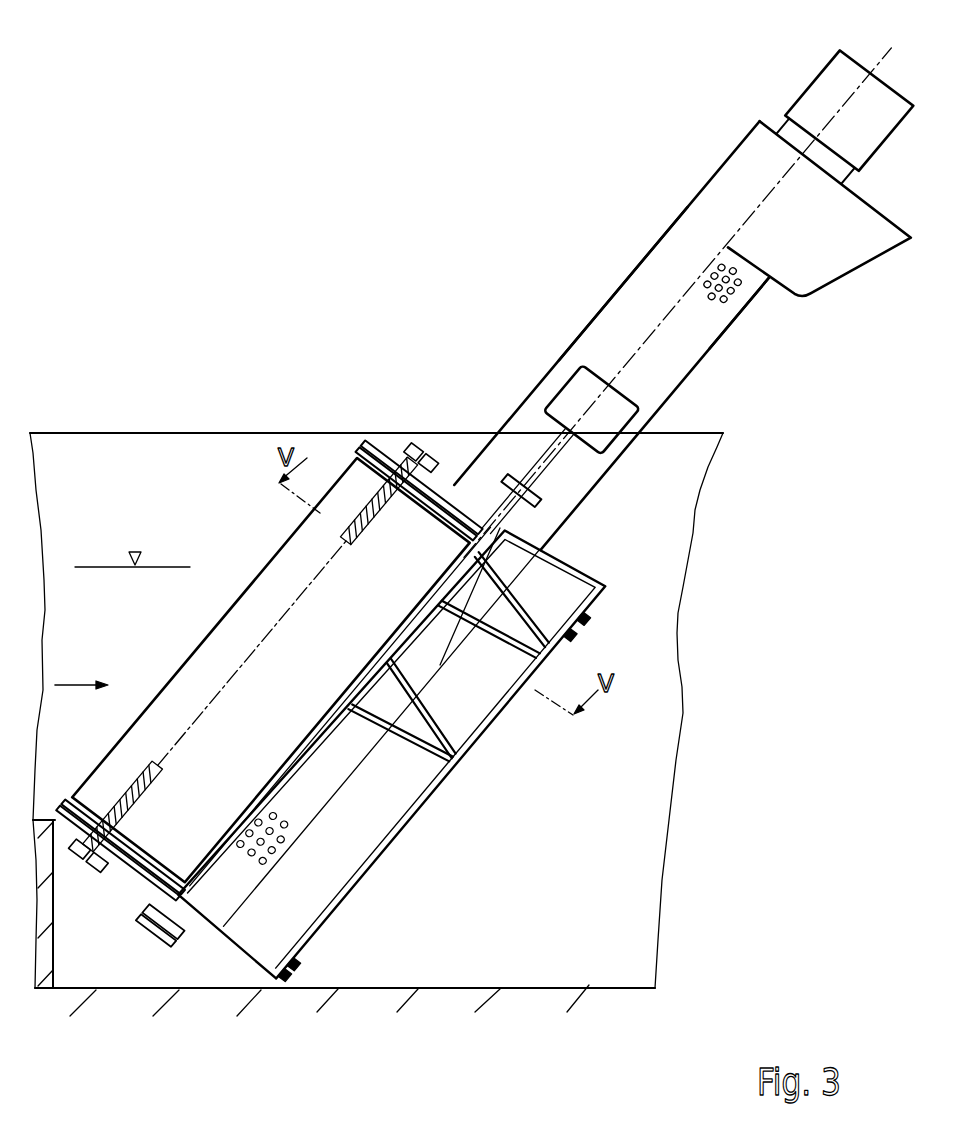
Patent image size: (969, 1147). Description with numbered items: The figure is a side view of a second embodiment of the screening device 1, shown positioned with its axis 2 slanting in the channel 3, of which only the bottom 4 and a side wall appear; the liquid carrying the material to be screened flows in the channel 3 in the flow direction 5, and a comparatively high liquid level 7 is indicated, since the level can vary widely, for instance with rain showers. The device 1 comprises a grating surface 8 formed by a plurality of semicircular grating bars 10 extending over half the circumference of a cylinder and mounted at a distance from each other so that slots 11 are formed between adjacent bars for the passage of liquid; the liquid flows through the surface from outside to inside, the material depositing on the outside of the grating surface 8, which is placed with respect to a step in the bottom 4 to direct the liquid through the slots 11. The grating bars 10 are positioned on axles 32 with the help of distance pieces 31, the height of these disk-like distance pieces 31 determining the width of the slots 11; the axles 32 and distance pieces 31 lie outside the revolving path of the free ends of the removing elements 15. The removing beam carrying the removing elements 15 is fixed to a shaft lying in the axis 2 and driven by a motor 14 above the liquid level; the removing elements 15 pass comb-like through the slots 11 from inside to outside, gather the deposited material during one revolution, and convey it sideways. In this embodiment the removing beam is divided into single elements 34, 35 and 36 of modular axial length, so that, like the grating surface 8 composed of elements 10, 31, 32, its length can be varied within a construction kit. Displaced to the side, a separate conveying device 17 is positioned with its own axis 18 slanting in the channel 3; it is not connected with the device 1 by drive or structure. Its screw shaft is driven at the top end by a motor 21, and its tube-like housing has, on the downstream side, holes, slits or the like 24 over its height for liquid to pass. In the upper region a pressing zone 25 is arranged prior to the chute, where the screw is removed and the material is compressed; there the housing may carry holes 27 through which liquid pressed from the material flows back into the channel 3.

The device 1 is at (539, 328).
The axis 2 is at (539, 462).
The channel 3 is at (73, 467).
The bottom 4 is at (527, 990).
The flow direction 5 is at (68, 685).
The liquid level 7 is at (134, 551).
The grating surface 8 is at (240, 629).
The grating bars 10 is at (378, 447).
The slots 11 is at (118, 862).
The motor 14 is at (630, 412).
The removing elements 15 is at (573, 637).
The conveying device 17 is at (595, 278).
The axis 18 is at (660, 323).
The motor 21 is at (820, 97).
The holes, slits or the like 24 is at (308, 852).
The pressing zone 25 is at (698, 244).
The holes 27 is at (742, 294).
The distance pieces 31 is at (393, 452).
The axles 32 is at (422, 445).
The removing beam element 34 is at (311, 746).
The removing beam element 35 is at (493, 722).
The removing beam element 36 is at (527, 605).